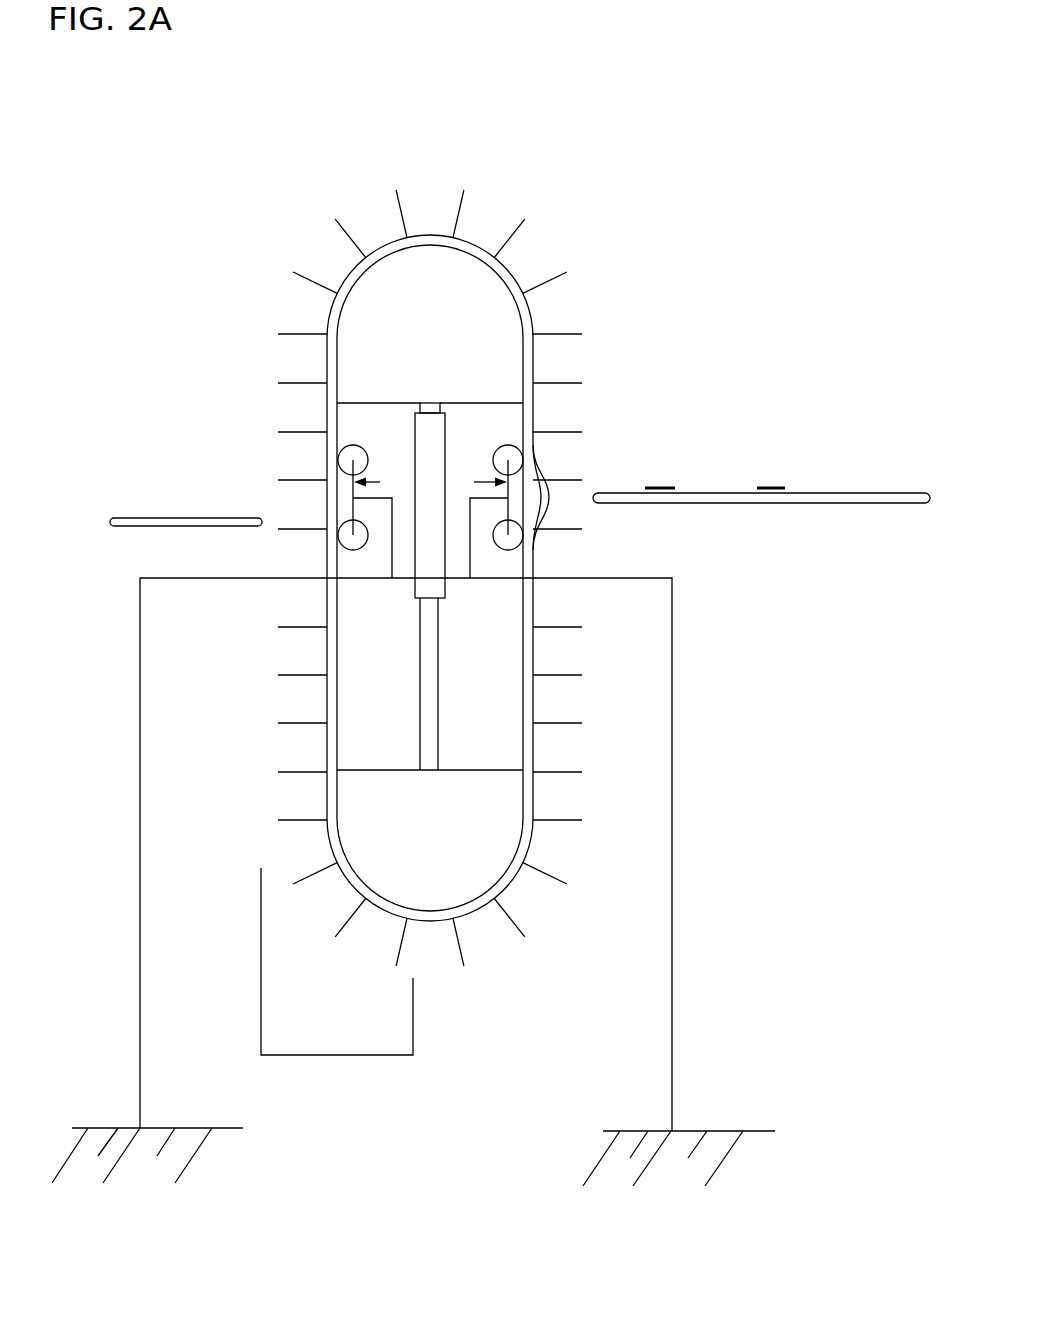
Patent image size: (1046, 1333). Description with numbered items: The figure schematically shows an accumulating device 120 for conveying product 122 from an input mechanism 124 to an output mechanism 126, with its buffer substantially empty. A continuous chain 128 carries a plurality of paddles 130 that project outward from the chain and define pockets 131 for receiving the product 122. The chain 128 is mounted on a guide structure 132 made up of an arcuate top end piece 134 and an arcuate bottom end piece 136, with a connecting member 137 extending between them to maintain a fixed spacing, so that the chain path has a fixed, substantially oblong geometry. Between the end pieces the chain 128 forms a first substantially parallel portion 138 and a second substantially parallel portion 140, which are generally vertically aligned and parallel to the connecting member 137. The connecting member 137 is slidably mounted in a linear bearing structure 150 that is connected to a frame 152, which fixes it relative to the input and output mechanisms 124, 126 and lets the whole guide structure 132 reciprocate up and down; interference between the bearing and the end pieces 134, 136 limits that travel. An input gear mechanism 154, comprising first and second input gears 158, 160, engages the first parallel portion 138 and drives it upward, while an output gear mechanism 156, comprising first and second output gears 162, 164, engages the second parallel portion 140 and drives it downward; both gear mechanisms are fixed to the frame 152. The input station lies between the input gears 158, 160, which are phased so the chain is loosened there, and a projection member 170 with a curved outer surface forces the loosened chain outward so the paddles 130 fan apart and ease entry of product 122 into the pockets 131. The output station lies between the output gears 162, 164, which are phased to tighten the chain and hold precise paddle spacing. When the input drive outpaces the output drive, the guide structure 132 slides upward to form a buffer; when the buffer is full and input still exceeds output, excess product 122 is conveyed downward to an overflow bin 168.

The accumulating device 120 is at (572, 192).
The product 122 is at (663, 487).
The input mechanism 124 is at (805, 503).
The output mechanism 126 is at (150, 527).
The continuous chain 128 is at (433, 233).
The paddles 130 is at (335, 219).
The pockets 131 is at (370, 212).
The guide structure 132 is at (476, 912).
The top arcuate end piece 134 is at (527, 369).
The bottom arcuate end piece 136 is at (347, 797).
The connecting member 137 is at (440, 702).
The first substantially parallel portion 138 is at (523, 610).
The second substantially parallel portion 140 is at (339, 663).
The linear bearing structure 150 is at (447, 446).
The frame 152 is at (140, 740).
The input gear mechanism 154 is at (475, 483).
The output gear mechanism 156 is at (382, 483).
The first input gear 158 is at (515, 452).
The second input gear 160 is at (518, 549).
The first output gear 162 is at (350, 446).
The second output gear 164 is at (349, 548).
The overflow bin 168 is at (340, 1056).
The projection member 170 is at (531, 496).